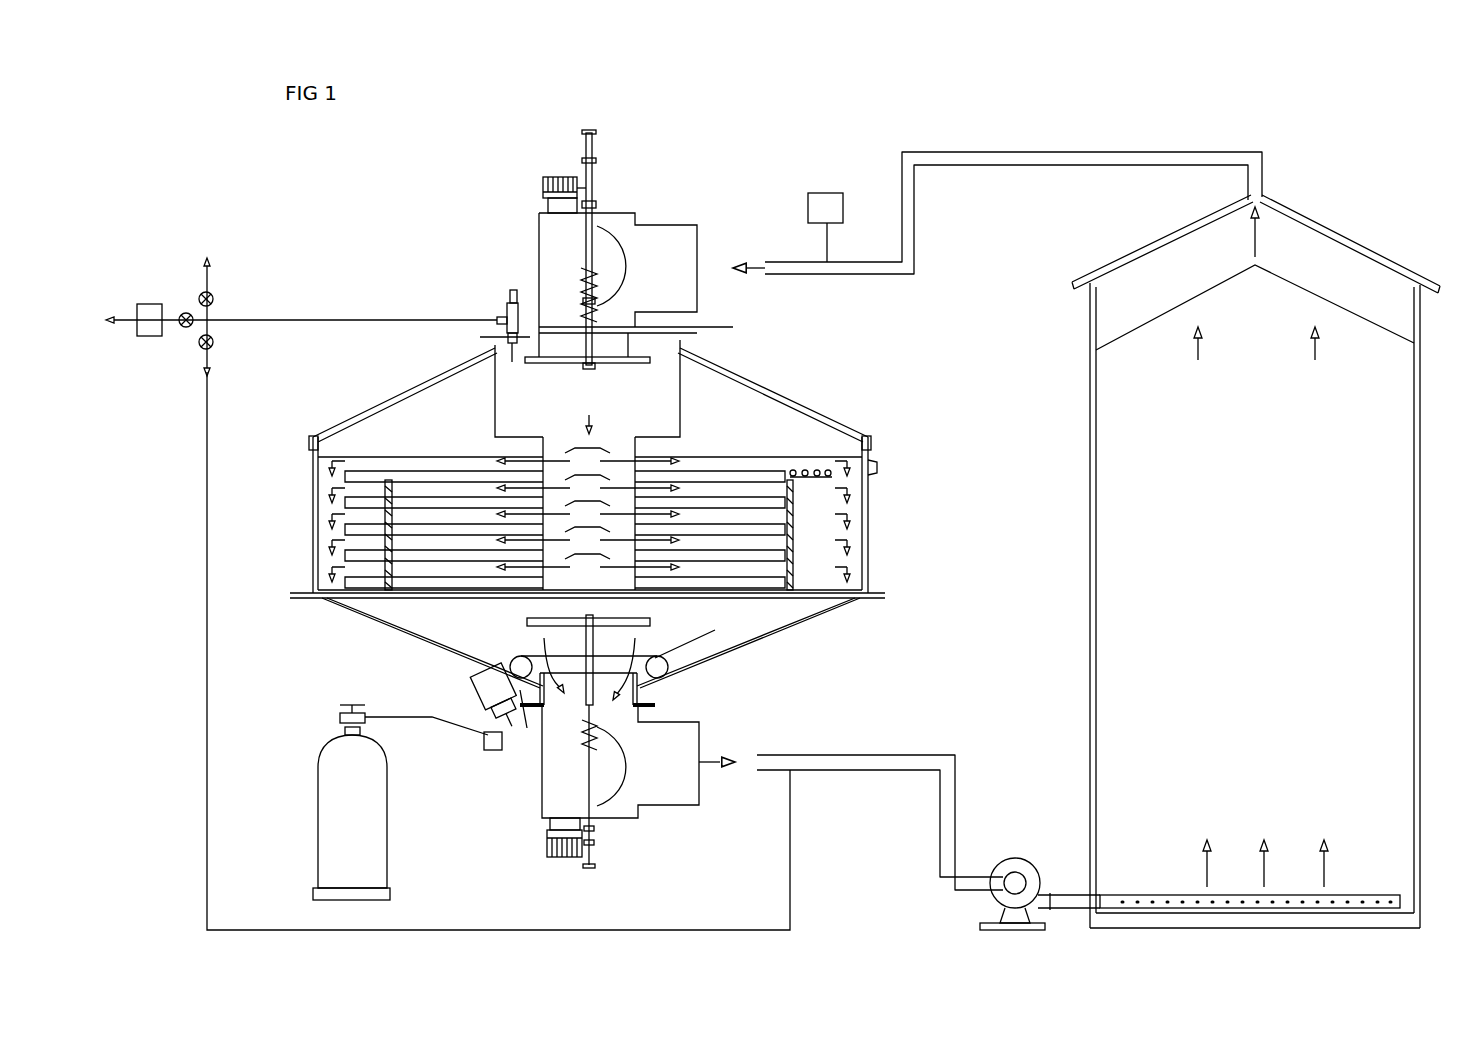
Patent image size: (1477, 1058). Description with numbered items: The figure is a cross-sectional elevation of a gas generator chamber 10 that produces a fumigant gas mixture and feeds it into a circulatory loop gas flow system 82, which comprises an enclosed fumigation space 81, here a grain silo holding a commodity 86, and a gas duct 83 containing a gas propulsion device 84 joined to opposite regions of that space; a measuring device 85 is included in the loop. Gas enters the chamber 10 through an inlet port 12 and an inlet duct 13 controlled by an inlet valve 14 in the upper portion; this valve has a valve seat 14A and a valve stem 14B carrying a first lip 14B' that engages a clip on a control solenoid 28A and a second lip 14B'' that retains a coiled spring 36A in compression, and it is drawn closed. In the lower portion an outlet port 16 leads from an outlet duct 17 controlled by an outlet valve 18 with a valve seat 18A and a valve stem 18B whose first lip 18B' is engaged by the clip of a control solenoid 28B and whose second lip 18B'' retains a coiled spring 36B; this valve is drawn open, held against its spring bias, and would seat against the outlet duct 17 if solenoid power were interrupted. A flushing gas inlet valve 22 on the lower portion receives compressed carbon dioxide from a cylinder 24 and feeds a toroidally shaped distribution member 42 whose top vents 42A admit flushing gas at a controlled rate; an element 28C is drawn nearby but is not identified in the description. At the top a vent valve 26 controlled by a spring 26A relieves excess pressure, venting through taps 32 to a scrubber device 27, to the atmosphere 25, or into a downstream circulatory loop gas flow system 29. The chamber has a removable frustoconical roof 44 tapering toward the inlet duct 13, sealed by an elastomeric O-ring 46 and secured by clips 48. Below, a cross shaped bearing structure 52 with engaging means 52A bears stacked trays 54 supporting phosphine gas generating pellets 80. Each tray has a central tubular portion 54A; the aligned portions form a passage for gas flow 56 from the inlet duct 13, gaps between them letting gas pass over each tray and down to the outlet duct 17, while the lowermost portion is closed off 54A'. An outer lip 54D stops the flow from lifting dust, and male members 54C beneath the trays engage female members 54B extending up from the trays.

The gas generator chamber 10 is at (774, 345).
The inlet port 12 is at (676, 240).
The inlet duct 13 is at (650, 337).
The inlet valve 14 is at (738, 93).
The valve seat 14A is at (612, 357).
The valve stem 14B is at (652, 115).
The first lip 14B' is at (655, 157).
The second lip 14B'' is at (657, 234).
The outlet port 16 is at (682, 748).
The outlet duct 17 is at (635, 685).
The outlet valve 18 is at (713, 833).
The valve seat 18A is at (597, 626).
The valve stem 18B is at (644, 871).
The first lip 18B' is at (647, 867).
The second lip 18B'' is at (653, 803).
The flushing gas inlet valve 22 is at (520, 730).
The cylinder 24 is at (372, 823).
The atmosphere 25 is at (197, 275).
The vent valve 26 is at (496, 355).
The spring 26A is at (506, 305).
The scrubber device 27 is at (157, 330).
The control solenoid 28A is at (550, 180).
The control solenoid 28B is at (565, 862).
The conveyor motor 28C is at (470, 727).
The circulatory loop gas flow system 29 is at (207, 478).
The taps 32 is at (213, 340).
The coiled spring 36A is at (582, 312).
The coiled spring 36B is at (584, 742).
The toroidally shaped distribution member 42 is at (480, 672).
The vents 42A is at (715, 630).
The removable roof 44 is at (418, 384).
The elastomeric O-ring 46 is at (310, 440).
The clips 48 is at (877, 466).
The cross shaped bearing structure 52 is at (362, 597).
The means for engaging trays 52A is at (389, 592).
The trays 54 is at (345, 581).
The central tubular portions 54A is at (769, 462).
The closed-off tubular portion 54A' is at (780, 614).
The female members 54B is at (320, 603).
The male members 54C is at (387, 480).
The outer lip 54D is at (835, 587).
The gas flow 56 is at (712, 262).
The phosphine gas generating pellets 80 is at (828, 470).
The enclosed fumigation space 81 is at (1088, 338).
The circulatory loop gas flow system 82 is at (1201, 138).
The gas duct 83 is at (1066, 163).
The gas propulsion device 84 is at (1003, 898).
The measuring device 85 is at (832, 196).
The commodity 86 is at (1120, 402).